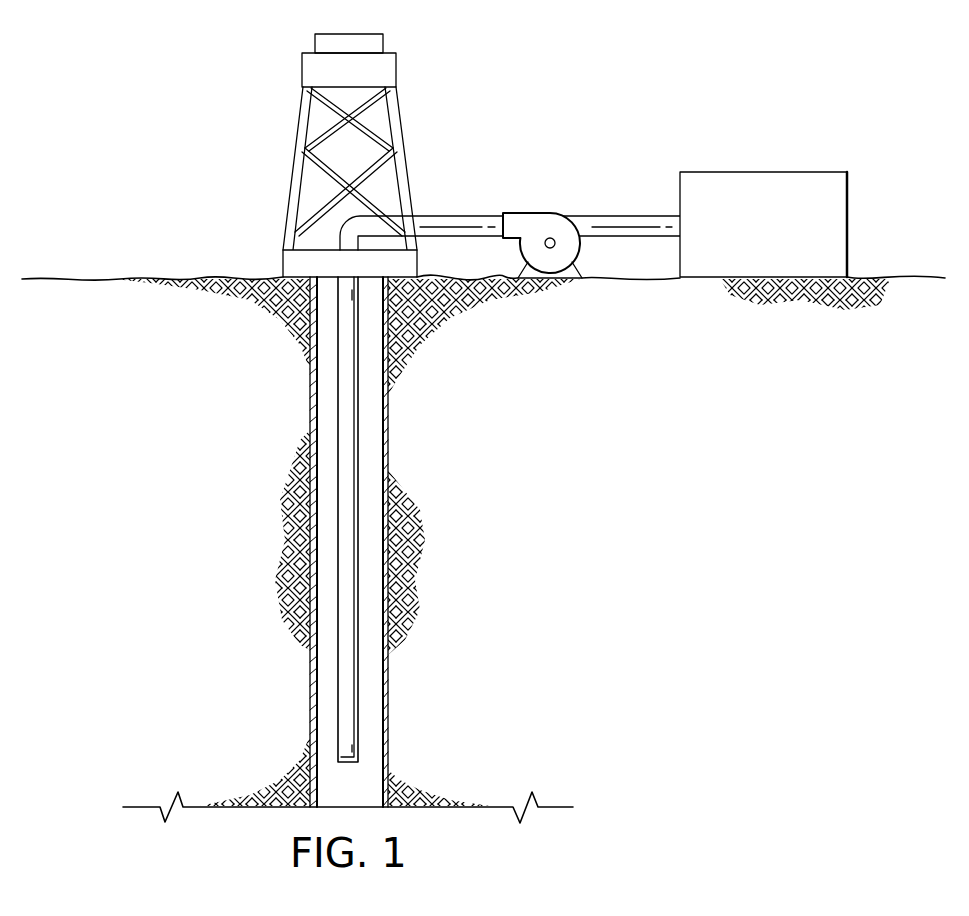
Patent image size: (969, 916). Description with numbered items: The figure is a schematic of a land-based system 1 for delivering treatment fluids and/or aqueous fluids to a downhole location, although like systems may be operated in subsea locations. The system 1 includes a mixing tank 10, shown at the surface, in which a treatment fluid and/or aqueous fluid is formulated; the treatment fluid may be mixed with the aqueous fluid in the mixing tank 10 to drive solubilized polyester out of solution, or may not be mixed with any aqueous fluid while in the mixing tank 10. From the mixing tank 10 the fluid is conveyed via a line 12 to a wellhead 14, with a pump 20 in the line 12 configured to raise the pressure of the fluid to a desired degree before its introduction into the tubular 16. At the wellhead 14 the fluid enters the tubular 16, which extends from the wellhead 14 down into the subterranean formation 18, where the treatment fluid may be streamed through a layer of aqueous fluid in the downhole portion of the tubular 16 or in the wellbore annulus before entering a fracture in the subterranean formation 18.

The system 1 is at (228, 62).
The mixing tank 10 is at (762, 172).
The line 12 is at (452, 215).
The wellhead 14 is at (283, 265).
The tubular 16 is at (338, 670).
The subterranean formation 18 is at (215, 533).
The pump 20 is at (553, 213).